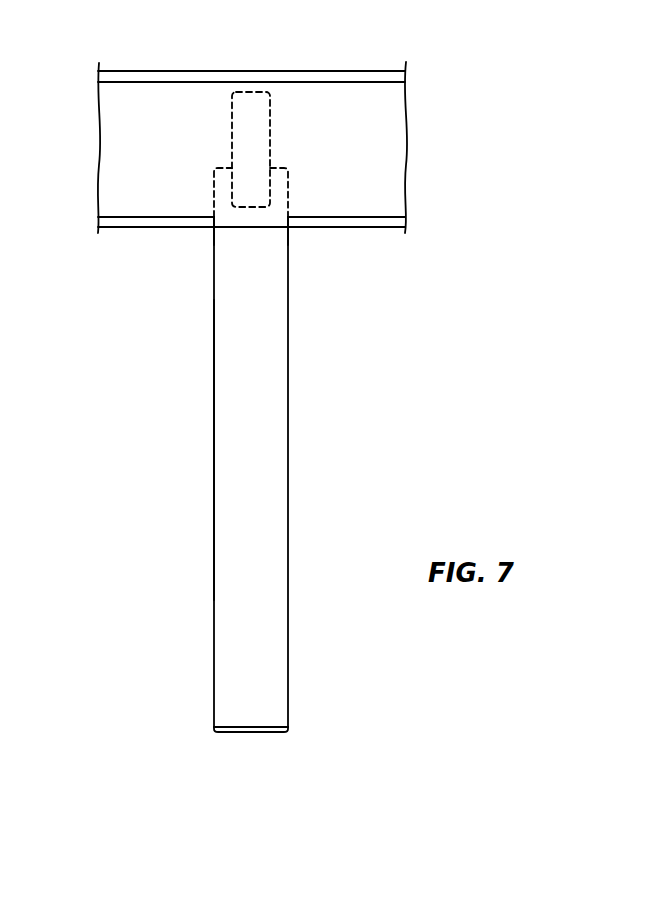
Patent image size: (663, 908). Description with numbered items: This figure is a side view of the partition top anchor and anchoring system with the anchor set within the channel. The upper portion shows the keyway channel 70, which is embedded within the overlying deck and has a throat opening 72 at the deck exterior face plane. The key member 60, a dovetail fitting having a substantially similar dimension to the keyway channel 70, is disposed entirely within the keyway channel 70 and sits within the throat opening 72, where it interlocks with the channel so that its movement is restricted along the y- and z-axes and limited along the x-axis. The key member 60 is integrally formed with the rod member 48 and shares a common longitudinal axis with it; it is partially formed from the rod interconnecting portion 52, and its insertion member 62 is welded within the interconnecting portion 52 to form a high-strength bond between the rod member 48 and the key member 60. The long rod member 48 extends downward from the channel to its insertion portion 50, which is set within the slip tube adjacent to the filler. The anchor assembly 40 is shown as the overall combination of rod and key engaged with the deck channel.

The keyway channel 70 is at (395, 75).
The throat opening 72 is at (388, 137).
The key member 60 is at (255, 130).
The insertion member 62 is at (255, 185).
The interconnecting portion 52 is at (282, 203).
The post 40 is at (272, 410).
The rod member 48 is at (228, 459).
The insertion portion 50 is at (273, 710).